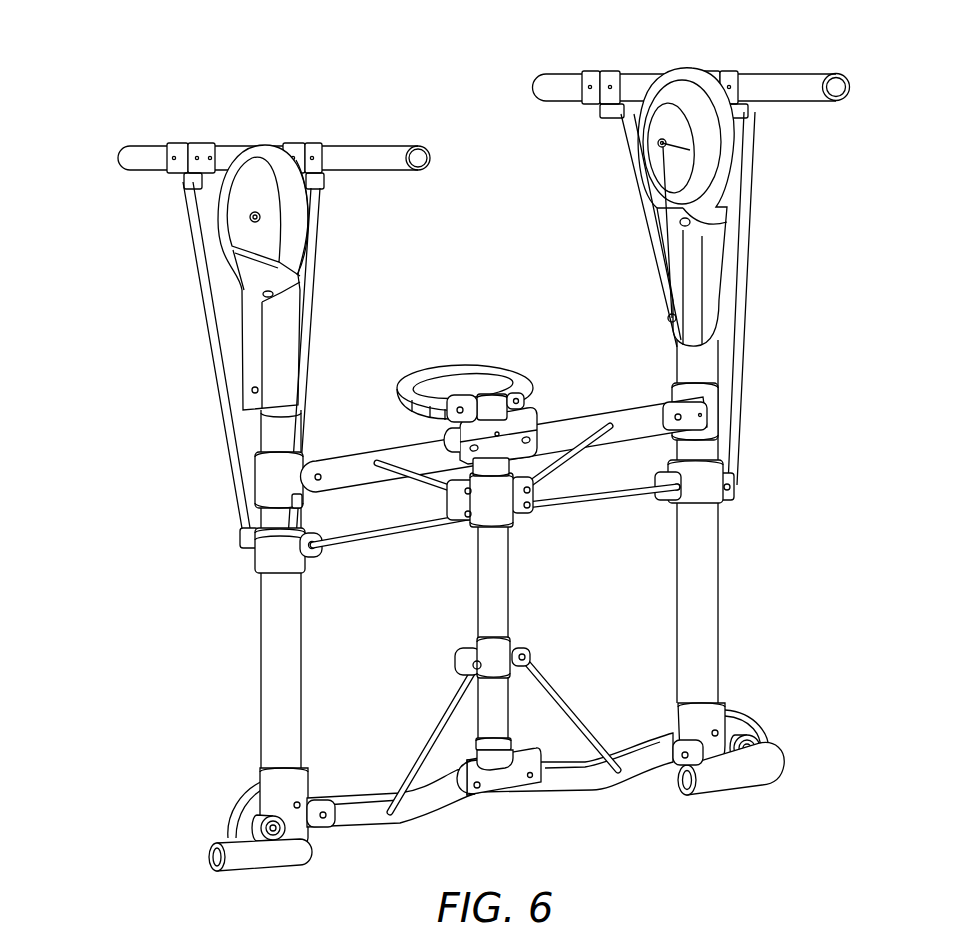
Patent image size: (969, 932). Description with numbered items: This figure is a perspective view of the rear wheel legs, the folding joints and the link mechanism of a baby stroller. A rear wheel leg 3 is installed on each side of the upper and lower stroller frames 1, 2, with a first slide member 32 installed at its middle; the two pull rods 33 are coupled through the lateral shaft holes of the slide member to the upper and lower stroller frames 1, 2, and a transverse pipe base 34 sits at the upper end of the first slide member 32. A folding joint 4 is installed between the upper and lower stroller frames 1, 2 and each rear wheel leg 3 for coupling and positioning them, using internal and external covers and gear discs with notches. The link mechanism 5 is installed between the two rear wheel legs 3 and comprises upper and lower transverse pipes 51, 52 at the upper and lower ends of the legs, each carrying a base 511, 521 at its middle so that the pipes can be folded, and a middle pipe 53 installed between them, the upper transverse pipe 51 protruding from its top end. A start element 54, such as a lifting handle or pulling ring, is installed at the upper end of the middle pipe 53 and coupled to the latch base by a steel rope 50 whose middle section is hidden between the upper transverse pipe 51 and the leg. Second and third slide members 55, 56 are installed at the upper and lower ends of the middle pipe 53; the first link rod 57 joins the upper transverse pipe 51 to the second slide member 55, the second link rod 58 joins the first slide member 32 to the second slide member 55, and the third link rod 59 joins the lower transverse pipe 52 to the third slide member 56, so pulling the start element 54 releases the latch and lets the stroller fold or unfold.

The upper stroller frame 1 is at (801, 82).
The lower stroller frame 2 is at (551, 91).
The rear wheel leg 3 is at (280, 713).
The folding joint 4 is at (233, 210).
The link mechanism 5 is at (498, 233).
The first slide member 32 is at (267, 552).
The pull rod 33 is at (207, 312).
The transverse pipe base 34 is at (272, 475).
The steel rope 50 is at (504, 408).
The upper transverse pipe 51 is at (573, 411).
The base 511 is at (494, 434).
The lower transverse pipe 52 is at (588, 780).
The base 521 is at (503, 780).
The middle pipe 53 is at (492, 593).
The start element 54 is at (446, 366).
The second slide member 55 is at (497, 498).
The third slide member 56 is at (495, 655).
The first link rod 57 is at (418, 480).
The second link rod 58 is at (642, 493).
The third link rod 59 is at (425, 757).